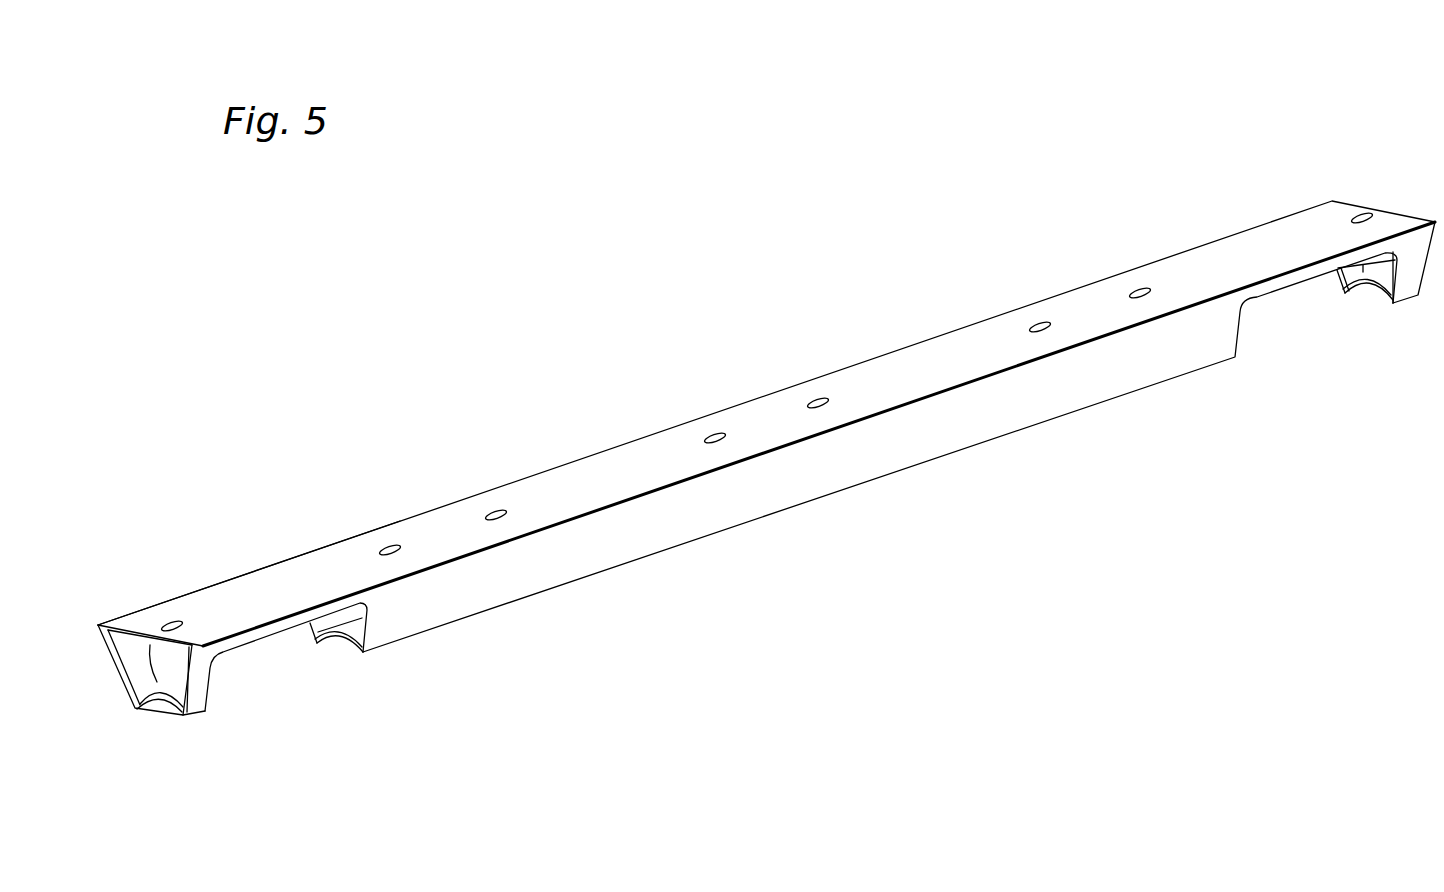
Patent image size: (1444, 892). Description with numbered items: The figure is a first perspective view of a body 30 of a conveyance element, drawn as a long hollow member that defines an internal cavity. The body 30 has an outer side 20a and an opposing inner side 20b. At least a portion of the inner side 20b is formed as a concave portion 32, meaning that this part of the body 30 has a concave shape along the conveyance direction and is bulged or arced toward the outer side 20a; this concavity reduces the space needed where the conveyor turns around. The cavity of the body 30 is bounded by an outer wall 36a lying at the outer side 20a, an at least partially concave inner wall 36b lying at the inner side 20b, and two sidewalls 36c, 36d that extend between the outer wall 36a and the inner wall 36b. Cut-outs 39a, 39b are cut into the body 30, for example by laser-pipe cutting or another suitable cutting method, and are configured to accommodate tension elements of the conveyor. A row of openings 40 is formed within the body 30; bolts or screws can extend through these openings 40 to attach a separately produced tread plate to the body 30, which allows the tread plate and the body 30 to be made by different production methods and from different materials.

The body 30 is at (951, 195).
The outer side 20a is at (857, 299).
The inner side 20b is at (881, 536).
The concave portion 32 is at (324, 668).
The outer wall 36a is at (260, 588).
The inner wall 36b is at (340, 637).
The sidewall 36c is at (312, 622).
The sidewall 36d is at (433, 613).
The cut-out 39a is at (286, 706).
The cut-out 39b is at (1308, 369).
The openings 40 is at (181, 623).